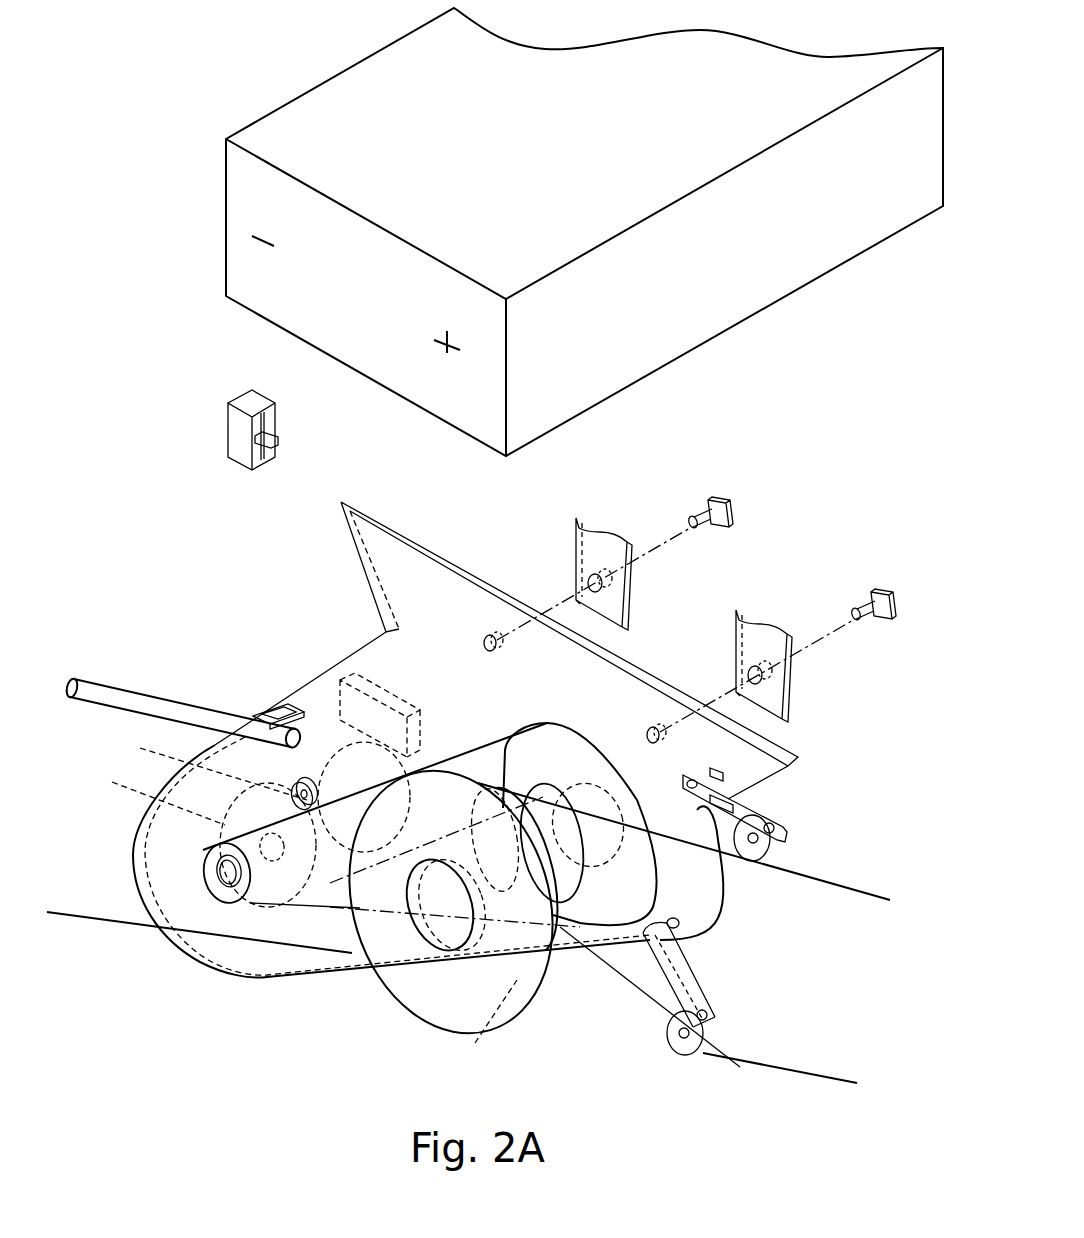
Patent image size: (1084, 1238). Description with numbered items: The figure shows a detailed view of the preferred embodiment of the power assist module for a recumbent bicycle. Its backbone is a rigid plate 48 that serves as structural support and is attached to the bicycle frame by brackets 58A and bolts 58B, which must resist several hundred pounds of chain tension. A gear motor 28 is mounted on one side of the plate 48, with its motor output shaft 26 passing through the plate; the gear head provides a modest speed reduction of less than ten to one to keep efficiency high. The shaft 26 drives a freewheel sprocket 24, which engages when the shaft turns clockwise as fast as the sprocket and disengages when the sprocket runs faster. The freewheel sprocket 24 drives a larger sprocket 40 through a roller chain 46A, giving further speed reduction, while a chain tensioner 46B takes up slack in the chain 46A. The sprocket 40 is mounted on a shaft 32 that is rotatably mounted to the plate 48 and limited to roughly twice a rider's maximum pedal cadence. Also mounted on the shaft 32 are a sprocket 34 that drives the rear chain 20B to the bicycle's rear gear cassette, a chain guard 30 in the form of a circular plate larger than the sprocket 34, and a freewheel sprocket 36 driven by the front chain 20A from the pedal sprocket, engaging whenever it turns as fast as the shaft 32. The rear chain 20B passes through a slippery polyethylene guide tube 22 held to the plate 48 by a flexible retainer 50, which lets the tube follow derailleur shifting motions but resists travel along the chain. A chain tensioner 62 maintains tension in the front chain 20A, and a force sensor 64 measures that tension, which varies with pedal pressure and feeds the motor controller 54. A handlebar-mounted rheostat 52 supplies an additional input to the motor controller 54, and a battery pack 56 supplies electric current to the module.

The front chain 20A is at (862, 877).
The rear chain 20B is at (138, 933).
The guide tube 22 is at (118, 673).
The freewheel sprocket 24 is at (205, 850).
The motor output shaft 26 is at (150, 797).
The gear motor 28 is at (177, 757).
The chain guard 30 is at (393, 987).
The shaft 32 is at (615, 875).
The sprocket 34 is at (475, 1043).
The freewheel sprocket 36 is at (570, 940).
The sprocket 40 is at (665, 900).
The roller chain 46A is at (467, 743).
The chain tensioner 46B is at (301, 782).
The plate 48 is at (428, 533).
The flexible retainer 50 is at (267, 710).
The rheostat 52 is at (225, 428).
The motor controller 54 is at (333, 698).
The battery pack 56 is at (735, 338).
The brackets 58A is at (638, 585).
The bolts 58B is at (883, 577).
The chain tensioner 62 is at (703, 978).
The force sensor 64 is at (777, 802).